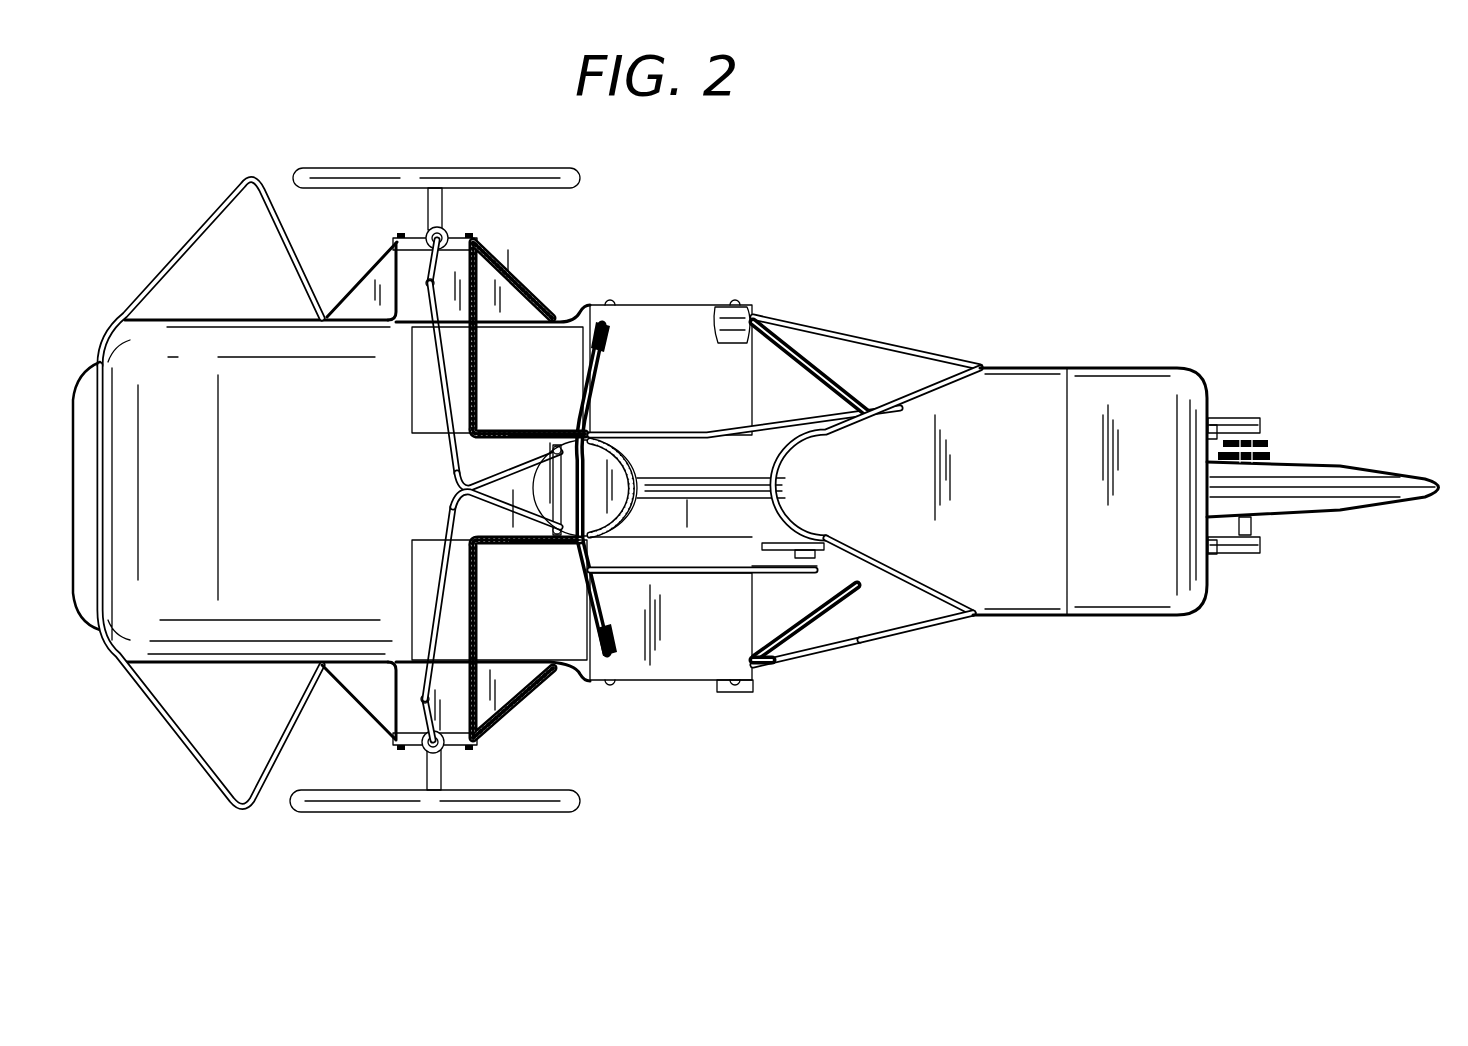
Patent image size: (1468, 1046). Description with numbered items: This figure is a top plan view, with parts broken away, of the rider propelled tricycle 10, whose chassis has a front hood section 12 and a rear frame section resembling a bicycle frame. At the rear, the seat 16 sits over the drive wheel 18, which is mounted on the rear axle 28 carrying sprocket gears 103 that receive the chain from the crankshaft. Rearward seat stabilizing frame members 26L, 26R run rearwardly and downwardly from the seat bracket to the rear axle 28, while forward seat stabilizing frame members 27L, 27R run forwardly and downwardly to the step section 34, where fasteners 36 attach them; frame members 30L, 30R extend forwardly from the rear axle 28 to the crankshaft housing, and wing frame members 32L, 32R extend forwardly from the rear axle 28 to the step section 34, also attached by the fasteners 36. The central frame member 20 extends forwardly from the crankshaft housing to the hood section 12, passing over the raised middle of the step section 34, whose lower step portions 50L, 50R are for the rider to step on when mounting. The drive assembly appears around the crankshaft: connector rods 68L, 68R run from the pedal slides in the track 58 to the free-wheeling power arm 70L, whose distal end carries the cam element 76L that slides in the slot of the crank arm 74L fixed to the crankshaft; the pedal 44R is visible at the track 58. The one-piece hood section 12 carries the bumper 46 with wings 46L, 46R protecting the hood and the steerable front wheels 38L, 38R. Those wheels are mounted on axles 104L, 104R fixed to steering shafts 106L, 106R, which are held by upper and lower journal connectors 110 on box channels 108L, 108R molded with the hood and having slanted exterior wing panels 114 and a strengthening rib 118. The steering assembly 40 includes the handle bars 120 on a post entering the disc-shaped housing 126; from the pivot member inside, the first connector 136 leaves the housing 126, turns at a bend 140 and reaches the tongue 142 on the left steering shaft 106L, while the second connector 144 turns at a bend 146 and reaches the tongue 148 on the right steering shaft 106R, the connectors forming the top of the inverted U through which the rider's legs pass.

The tricycle 10 is at (828, 214).
The hood section 12 is at (205, 674).
The seat 16 is at (1015, 415).
The drive wheel 18 is at (1410, 492).
The central frame member 20 is at (720, 478).
The rearward seat stabilizing frame member 26L is at (1215, 552).
The rearward seat stabilizing frame member 26R is at (1213, 425).
The forward seat stabilizing frame member 27L is at (840, 592).
The forward seat stabilizing frame member 27R is at (850, 380).
The rear axle 28 is at (1252, 522).
The frame member 30L is at (1212, 538).
The frame member 30R is at (1245, 420).
The wing frame member 32L is at (912, 633).
The wing frame member 32R is at (905, 352).
The step section 34 is at (728, 300).
The fasteners 36 is at (622, 300).
The steerable front wheel 38L is at (445, 813).
The steerable front wheel 38R is at (555, 170).
The steering assembly 40 is at (427, 518).
The pedal 44R is at (455, 368).
The bumper 46 is at (80, 615).
The wing 46L is at (170, 735).
The wing 46R is at (180, 242).
The lower step portion 50L is at (757, 672).
The lower step portion 50R is at (775, 330).
The track 58 is at (426, 550).
The connector rod 68L is at (712, 575).
The connector rod 68R is at (770, 420).
The power arm 70L is at (838, 565).
The crank arm 74L is at (780, 543).
The cam element 76L is at (833, 551).
The sprocket gears 103 is at (1270, 450).
The axle 104L is at (443, 232).
The axle 104R is at (428, 778).
The steering shaft 106L is at (450, 745).
The steering shaft 106R is at (432, 232).
The box channel 108L is at (535, 702).
The box channel 108R is at (524, 266).
The journal connectors 110 is at (428, 225).
The wing panel 114 is at (355, 282).
The rib 118 is at (512, 317).
The handle bars 120 is at (585, 407).
The housing 126 is at (615, 470).
The first connector 136 is at (442, 600).
The bend 140 is at (455, 492).
The tongue 142 is at (395, 715).
The second connector 144 is at (442, 362).
The bend 146 is at (447, 482).
The tongue 148 is at (393, 243).